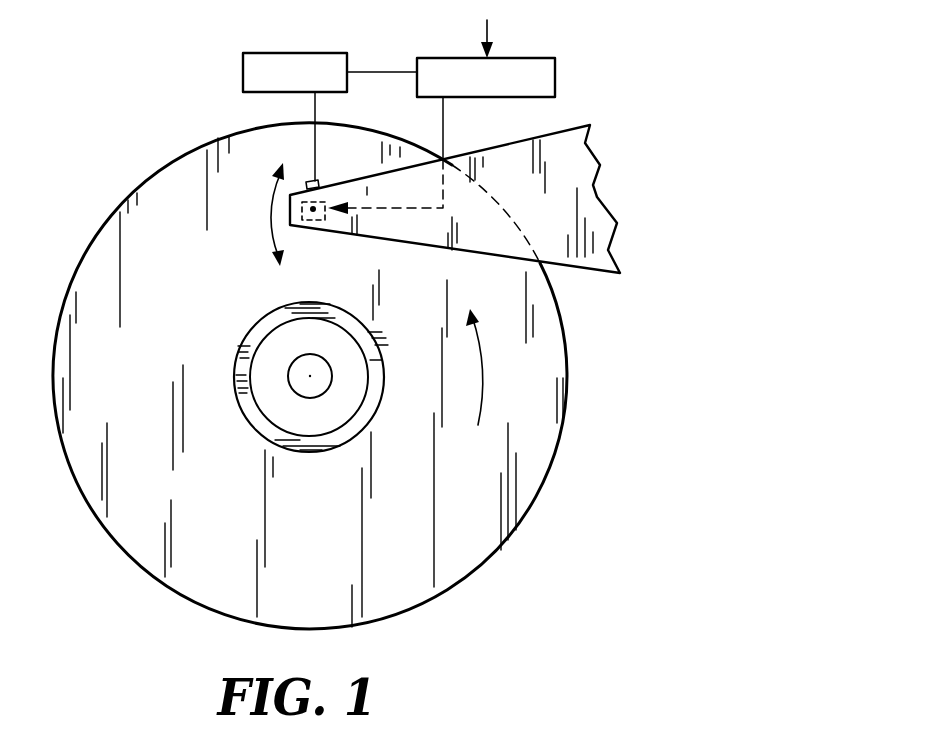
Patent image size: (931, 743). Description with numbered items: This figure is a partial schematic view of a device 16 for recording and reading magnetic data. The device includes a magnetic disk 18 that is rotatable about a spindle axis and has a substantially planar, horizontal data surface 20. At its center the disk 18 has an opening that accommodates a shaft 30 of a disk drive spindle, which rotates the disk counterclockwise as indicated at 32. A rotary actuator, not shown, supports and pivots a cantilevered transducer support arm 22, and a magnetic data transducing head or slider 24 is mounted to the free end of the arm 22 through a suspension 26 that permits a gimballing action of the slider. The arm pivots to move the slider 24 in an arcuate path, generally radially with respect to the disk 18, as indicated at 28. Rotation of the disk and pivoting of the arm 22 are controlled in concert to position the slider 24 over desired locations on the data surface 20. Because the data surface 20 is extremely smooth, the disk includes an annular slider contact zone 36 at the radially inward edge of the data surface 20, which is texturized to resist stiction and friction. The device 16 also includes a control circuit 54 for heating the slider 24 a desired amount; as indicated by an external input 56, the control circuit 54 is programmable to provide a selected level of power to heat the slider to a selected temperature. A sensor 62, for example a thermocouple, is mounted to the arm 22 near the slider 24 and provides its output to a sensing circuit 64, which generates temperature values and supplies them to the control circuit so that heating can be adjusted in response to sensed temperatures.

The device 16 is at (130, 137).
The magnetic disk 18 is at (87, 247).
The data surface 20 is at (157, 400).
The transducer support arm 22 is at (585, 182).
The transducing head or slider 24 is at (326, 219).
The suspension 26 is at (312, 216).
The arcuate path 28 is at (268, 217).
The shaft 30 is at (318, 380).
The counterclockwise rotation 32 is at (488, 375).
The annular slider contact zone 36 is at (265, 330).
The control circuit 54 is at (557, 80).
The external input 56 is at (487, 26).
The sensor 62 is at (318, 183).
The sensing circuit 64 is at (290, 53).